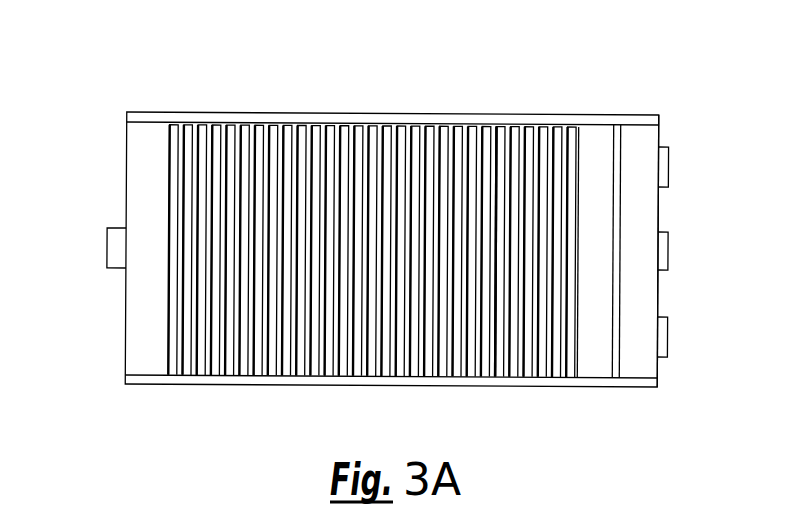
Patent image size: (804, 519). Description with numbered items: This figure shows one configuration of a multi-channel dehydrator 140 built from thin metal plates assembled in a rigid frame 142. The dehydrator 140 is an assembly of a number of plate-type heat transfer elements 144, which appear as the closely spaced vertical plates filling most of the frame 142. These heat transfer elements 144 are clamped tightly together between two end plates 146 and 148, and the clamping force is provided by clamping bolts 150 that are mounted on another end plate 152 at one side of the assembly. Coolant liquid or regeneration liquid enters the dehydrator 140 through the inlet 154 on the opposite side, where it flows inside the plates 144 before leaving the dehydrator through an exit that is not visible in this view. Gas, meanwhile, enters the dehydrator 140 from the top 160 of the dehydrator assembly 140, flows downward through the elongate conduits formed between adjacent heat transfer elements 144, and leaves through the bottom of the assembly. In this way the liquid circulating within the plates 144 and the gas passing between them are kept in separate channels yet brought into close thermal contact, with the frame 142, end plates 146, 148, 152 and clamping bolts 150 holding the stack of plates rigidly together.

The dehydrator 140 is at (440, 73).
The rigid frame 142 is at (600, 121).
The plate-type heat transfer elements 144 is at (542, 372).
The end plate 146 is at (592, 370).
The end plate 148 is at (146, 368).
The clamping bolts 150 is at (668, 333).
The end plate 152 is at (645, 372).
The inlet 154 is at (107, 260).
The top of the dehydrator assembly 160 is at (493, 377).